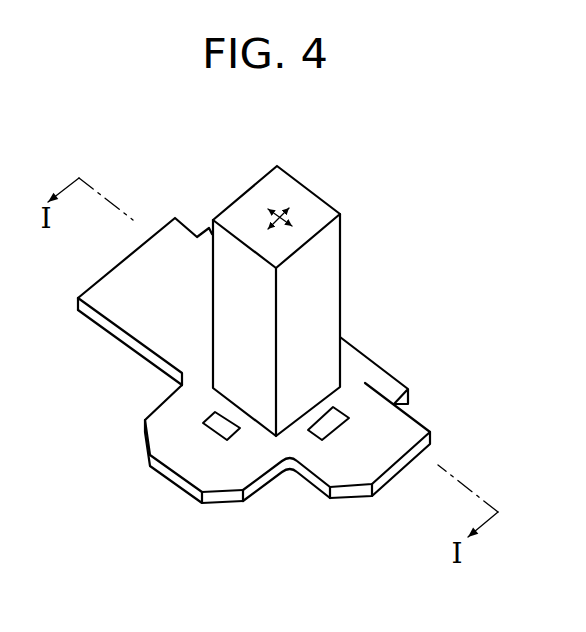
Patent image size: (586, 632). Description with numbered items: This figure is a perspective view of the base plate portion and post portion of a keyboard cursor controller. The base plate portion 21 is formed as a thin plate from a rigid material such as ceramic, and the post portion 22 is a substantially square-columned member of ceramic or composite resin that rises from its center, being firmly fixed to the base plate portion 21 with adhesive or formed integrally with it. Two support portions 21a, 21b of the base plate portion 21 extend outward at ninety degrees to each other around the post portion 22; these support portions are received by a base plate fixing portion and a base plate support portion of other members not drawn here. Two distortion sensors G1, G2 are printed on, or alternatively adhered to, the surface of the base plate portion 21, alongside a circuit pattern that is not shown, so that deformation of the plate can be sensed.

The base plate portion 21 is at (127, 320).
The support portion 21a is at (405, 428).
The support portion 21b is at (177, 460).
The post portion 22 is at (330, 282).
The distortion sensor G1 is at (327, 428).
The distortion sensor G2 is at (220, 428).